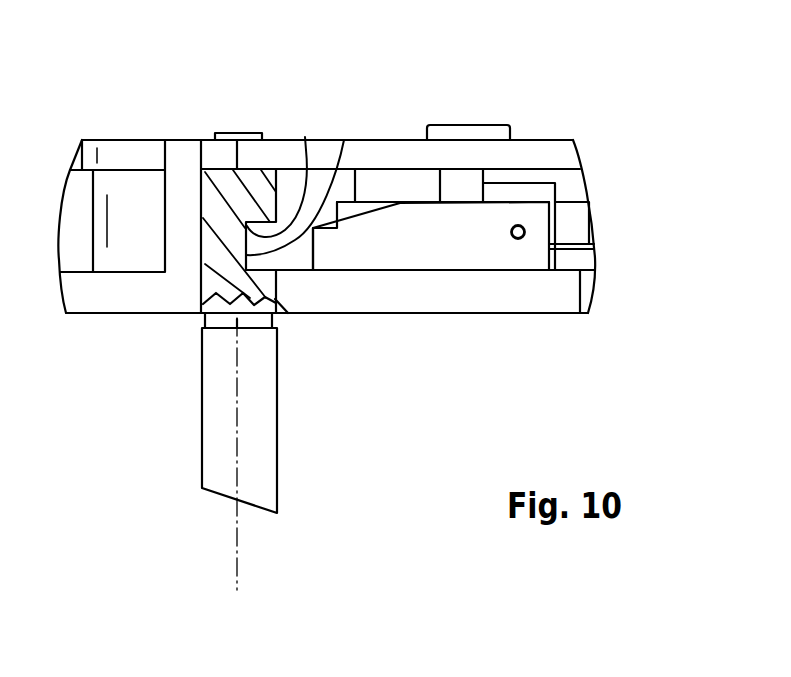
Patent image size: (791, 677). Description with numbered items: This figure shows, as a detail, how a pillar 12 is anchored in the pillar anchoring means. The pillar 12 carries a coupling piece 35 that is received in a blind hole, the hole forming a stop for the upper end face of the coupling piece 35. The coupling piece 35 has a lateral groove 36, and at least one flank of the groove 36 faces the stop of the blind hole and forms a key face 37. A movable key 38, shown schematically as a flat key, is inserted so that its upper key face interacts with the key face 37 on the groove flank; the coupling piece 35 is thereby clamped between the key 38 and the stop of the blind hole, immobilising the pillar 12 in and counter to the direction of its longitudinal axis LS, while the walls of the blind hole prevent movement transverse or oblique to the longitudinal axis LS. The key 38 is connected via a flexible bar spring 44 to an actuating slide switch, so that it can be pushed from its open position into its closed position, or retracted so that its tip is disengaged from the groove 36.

The pillar 12 is at (223, 477).
The coupling piece 35 is at (223, 255).
The lateral groove 36 is at (344, 140).
The key face 37 is at (305, 137).
The key 38 is at (375, 250).
The flexible bar spring 44 is at (525, 229).
The longitudinal axis LS is at (241, 572).